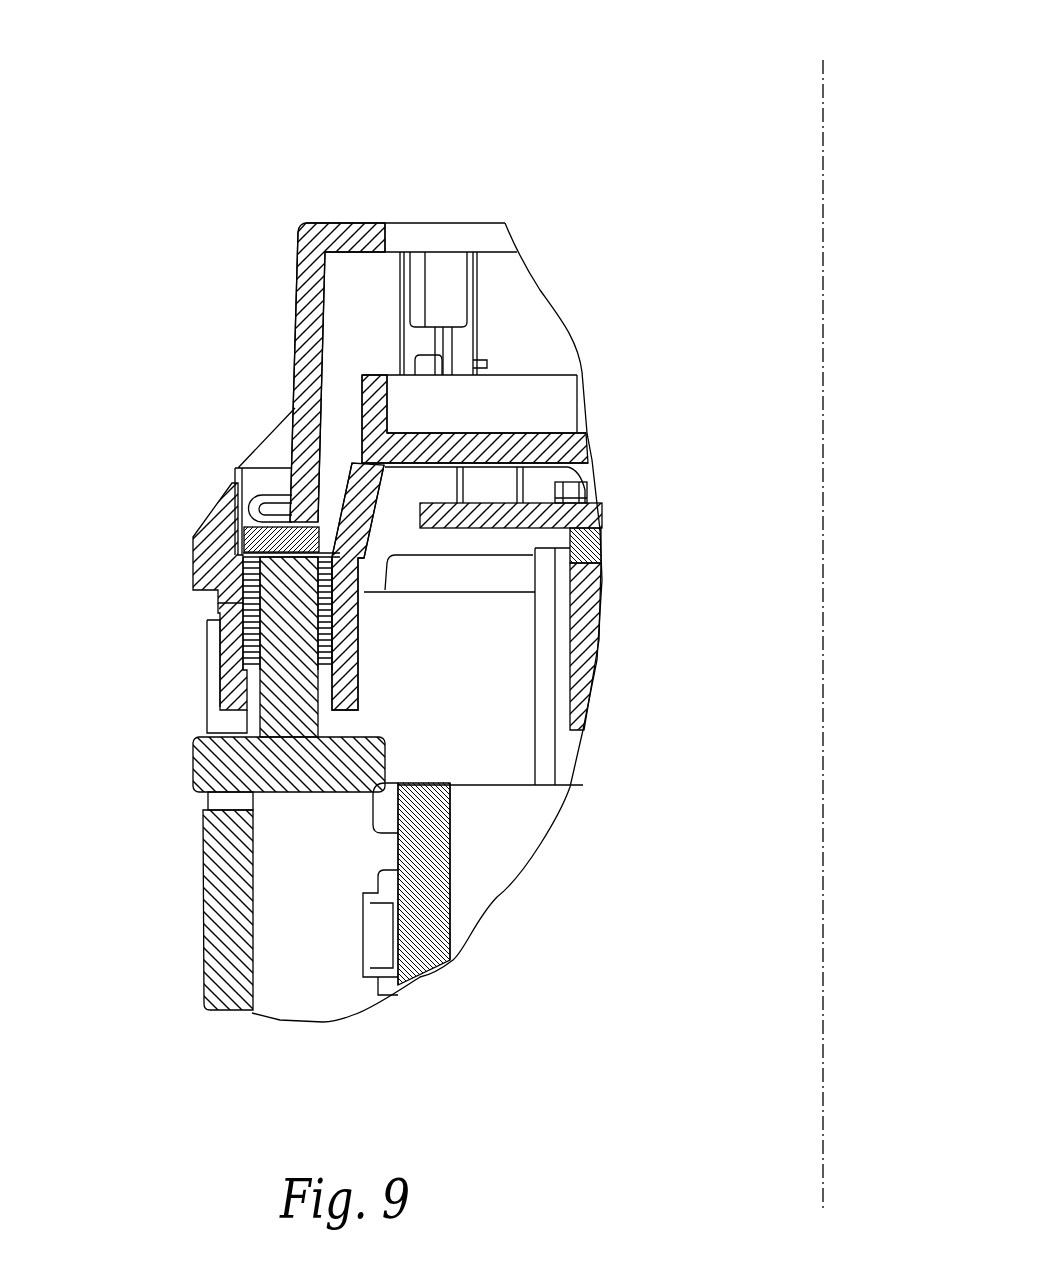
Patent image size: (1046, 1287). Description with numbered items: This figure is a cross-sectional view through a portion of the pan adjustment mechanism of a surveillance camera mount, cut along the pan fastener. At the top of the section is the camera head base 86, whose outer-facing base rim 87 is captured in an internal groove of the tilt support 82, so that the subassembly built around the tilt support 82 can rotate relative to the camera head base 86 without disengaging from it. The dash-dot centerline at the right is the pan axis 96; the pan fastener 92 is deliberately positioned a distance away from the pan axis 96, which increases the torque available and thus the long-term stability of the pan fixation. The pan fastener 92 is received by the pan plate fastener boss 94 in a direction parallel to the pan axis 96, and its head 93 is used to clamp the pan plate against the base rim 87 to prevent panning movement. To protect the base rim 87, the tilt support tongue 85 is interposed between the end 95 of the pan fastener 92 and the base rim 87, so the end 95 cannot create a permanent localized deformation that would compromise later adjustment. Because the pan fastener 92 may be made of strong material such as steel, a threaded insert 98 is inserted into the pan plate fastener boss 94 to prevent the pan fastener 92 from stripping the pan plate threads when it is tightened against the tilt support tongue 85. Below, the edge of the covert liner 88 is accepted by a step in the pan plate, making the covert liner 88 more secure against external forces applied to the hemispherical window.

The tilt support 82 is at (203, 558).
The tilt support tongue 85 is at (238, 492).
The camera head base 86 is at (284, 281).
The base rim 87 is at (268, 497).
The covert liner 88 is at (222, 947).
The pan fastener 92 is at (176, 760).
The head 93 is at (220, 762).
The pan plate fastener boss 94 is at (222, 610).
The end 95 is at (290, 555).
The pan axis 96 is at (823, 112).
The threaded insert 98 is at (252, 603).